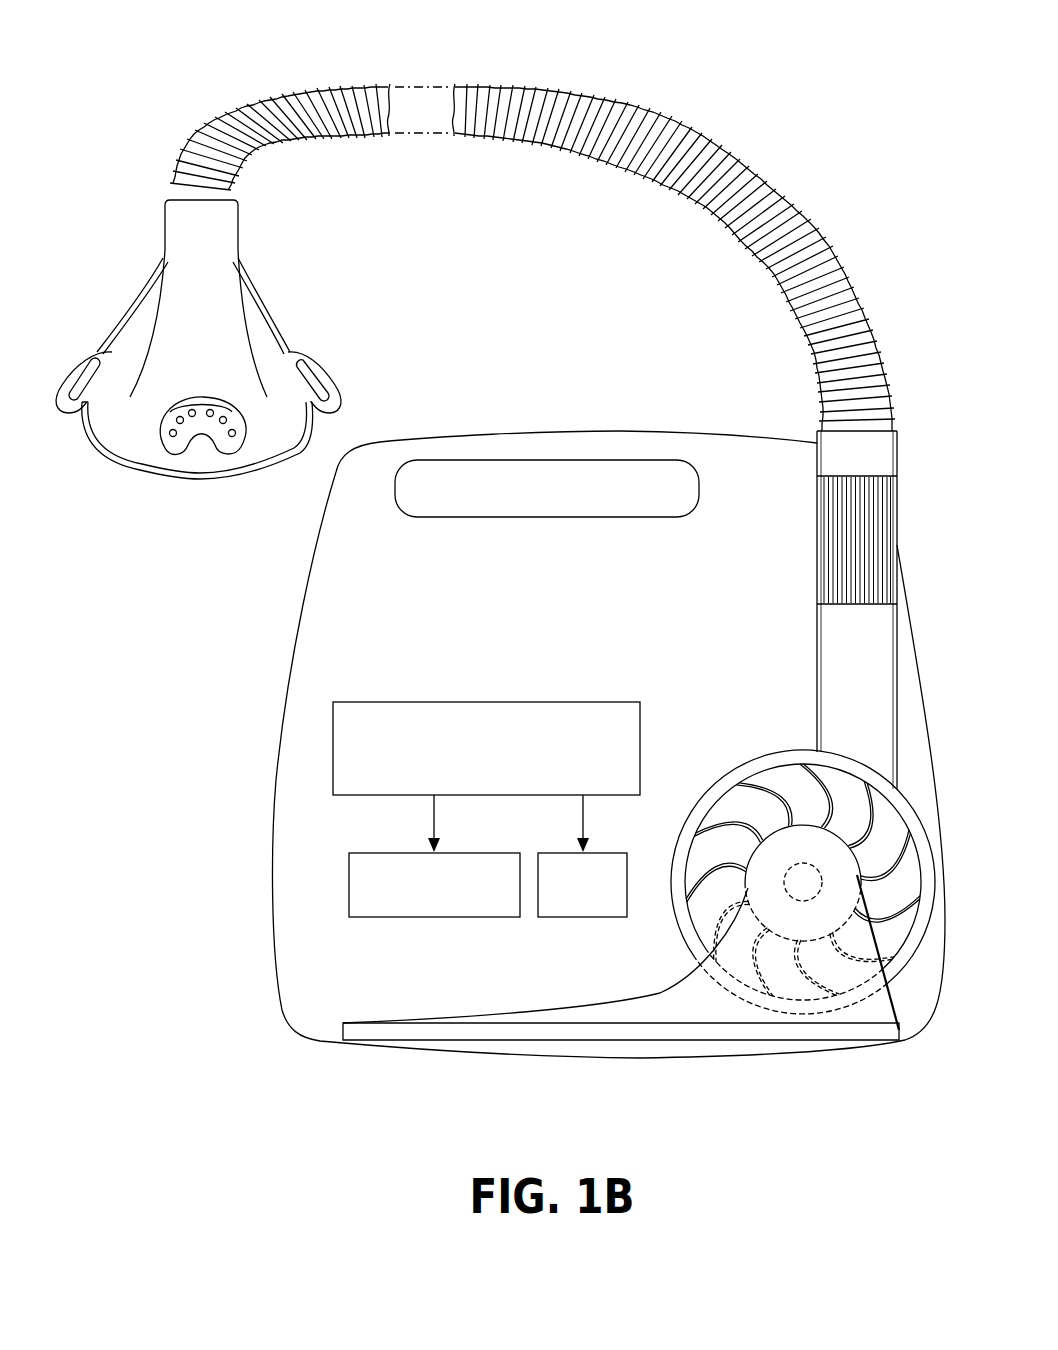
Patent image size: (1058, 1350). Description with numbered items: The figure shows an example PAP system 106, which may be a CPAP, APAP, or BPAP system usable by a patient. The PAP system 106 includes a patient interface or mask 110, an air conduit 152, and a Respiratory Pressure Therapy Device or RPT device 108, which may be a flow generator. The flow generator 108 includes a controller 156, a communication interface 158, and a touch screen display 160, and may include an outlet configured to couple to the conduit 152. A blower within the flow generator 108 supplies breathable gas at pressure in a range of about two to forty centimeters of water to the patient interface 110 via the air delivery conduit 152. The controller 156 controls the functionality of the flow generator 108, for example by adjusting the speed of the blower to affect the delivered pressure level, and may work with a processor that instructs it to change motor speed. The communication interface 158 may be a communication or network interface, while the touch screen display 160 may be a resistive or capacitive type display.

The PAP system 106 is at (811, 1110).
The RPT device 108 is at (328, 1045).
The patient interface 110 is at (139, 330).
The air conduit 152 is at (615, 118).
The controller 156 is at (477, 702).
The communication interface 158 is at (445, 917).
The touch screen display 160 is at (603, 917).